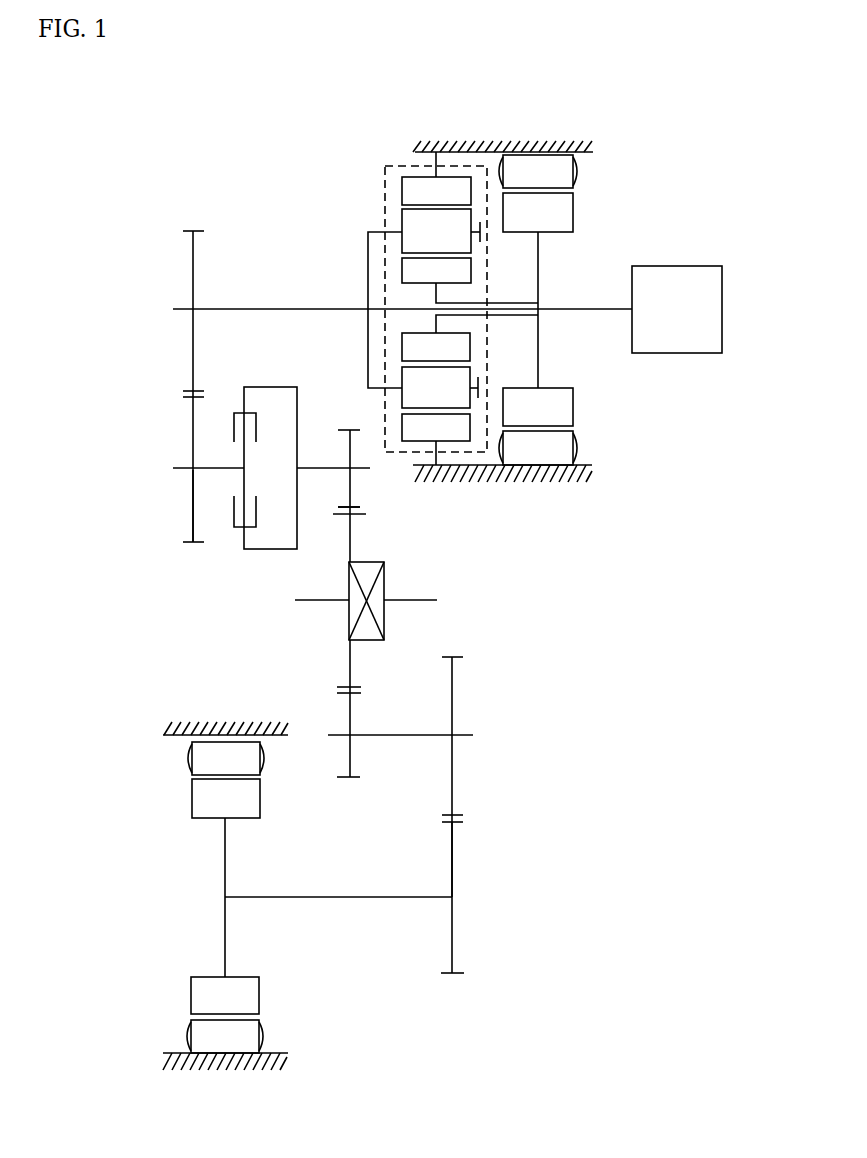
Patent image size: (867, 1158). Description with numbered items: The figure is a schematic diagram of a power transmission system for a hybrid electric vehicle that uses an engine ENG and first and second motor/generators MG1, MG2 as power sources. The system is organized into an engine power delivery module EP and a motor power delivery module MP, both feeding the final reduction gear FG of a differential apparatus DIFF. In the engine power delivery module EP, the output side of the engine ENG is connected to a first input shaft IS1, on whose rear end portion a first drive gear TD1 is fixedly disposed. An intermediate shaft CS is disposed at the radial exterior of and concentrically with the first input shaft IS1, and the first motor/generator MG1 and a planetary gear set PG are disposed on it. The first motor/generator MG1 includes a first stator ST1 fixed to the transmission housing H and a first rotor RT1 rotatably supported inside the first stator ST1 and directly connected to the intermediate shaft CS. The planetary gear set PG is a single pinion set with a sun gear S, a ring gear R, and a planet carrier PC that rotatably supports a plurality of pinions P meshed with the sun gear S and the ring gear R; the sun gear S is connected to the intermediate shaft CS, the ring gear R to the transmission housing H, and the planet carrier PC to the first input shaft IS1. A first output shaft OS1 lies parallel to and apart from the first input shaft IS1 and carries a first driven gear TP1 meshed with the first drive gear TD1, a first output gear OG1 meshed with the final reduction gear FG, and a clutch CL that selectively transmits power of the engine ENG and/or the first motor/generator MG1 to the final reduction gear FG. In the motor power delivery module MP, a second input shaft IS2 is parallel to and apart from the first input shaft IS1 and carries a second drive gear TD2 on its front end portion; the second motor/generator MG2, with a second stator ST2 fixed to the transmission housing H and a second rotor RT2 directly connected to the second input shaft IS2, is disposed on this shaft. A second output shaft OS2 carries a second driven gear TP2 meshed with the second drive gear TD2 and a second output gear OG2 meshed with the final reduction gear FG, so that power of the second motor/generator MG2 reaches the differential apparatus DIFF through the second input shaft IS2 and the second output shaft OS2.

The transmission housing H is at (478, 150).
The planetary gear set PG is at (425, 285).
The planet carrier PC is at (398, 232).
The ring gear R is at (436, 191).
The pinions P is at (441, 231).
The sun gear S is at (436, 272).
The first stator ST1 is at (538, 171).
The first rotor RT1 is at (538, 212).
The first motor/generator MG1 is at (566, 271).
The engine ENG is at (677, 309).
The intermediate shaft CS is at (512, 315).
The first input shaft IS1 is at (295, 306).
The first drive gear TD1 is at (193, 263).
The first output shaft OS1 is at (207, 466).
The first driven gear TP1 is at (193, 507).
The clutch CL is at (233, 531).
The final reduction gear FG is at (350, 550).
The first output gear OG1 is at (352, 488).
The differential apparatus DIFF is at (384, 617).
The second output gear OG2 is at (352, 712).
The second output shaft OS2 is at (398, 738).
The second driven gear TP2 is at (453, 777).
The second drive gear TD2 is at (455, 935).
The second input shaft IS2 is at (338, 900).
The second motor/generator MG2 is at (198, 897).
The second stator ST2 is at (226, 759).
The second rotor RT2 is at (226, 798).
The engine power delivery module EP is at (88, 217).
The motor power delivery module MP is at (88, 709).